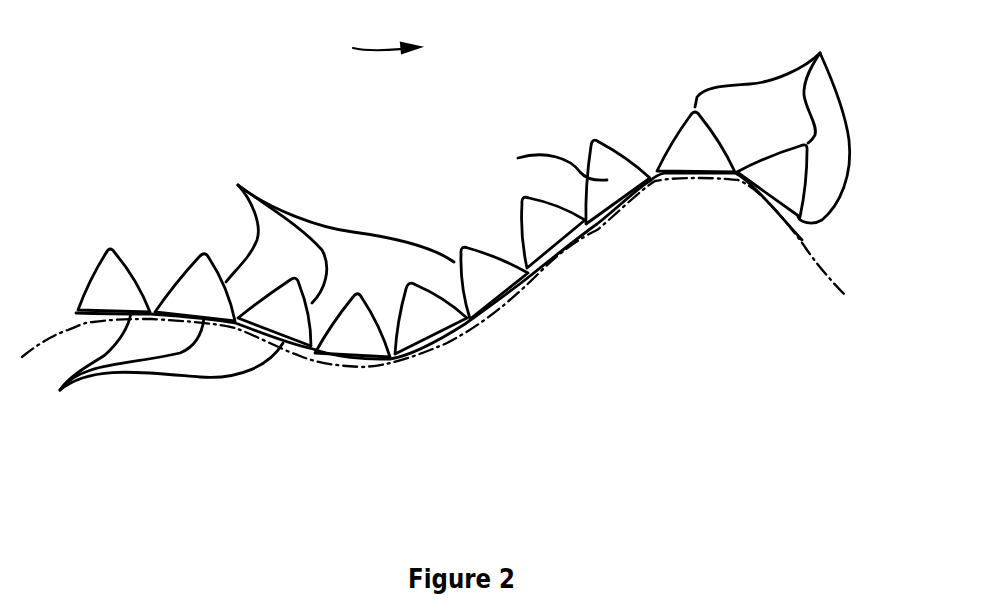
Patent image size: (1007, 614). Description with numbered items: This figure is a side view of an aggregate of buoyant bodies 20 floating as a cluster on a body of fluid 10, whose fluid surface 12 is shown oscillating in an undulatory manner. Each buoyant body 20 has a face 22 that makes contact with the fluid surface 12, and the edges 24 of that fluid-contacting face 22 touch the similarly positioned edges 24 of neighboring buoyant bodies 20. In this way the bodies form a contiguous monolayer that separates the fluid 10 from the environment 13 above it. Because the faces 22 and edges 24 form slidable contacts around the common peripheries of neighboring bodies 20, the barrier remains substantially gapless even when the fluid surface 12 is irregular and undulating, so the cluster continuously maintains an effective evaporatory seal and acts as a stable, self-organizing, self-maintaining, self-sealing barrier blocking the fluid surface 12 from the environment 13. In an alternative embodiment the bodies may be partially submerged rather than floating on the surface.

The body of fluid 10 is at (712, 303).
The fluid surface 12 is at (828, 275).
The environment 13 is at (367, 49).
The buoyant body 20 is at (323, 231).
The face 22 is at (547, 222).
The edge 24 is at (772, 121).